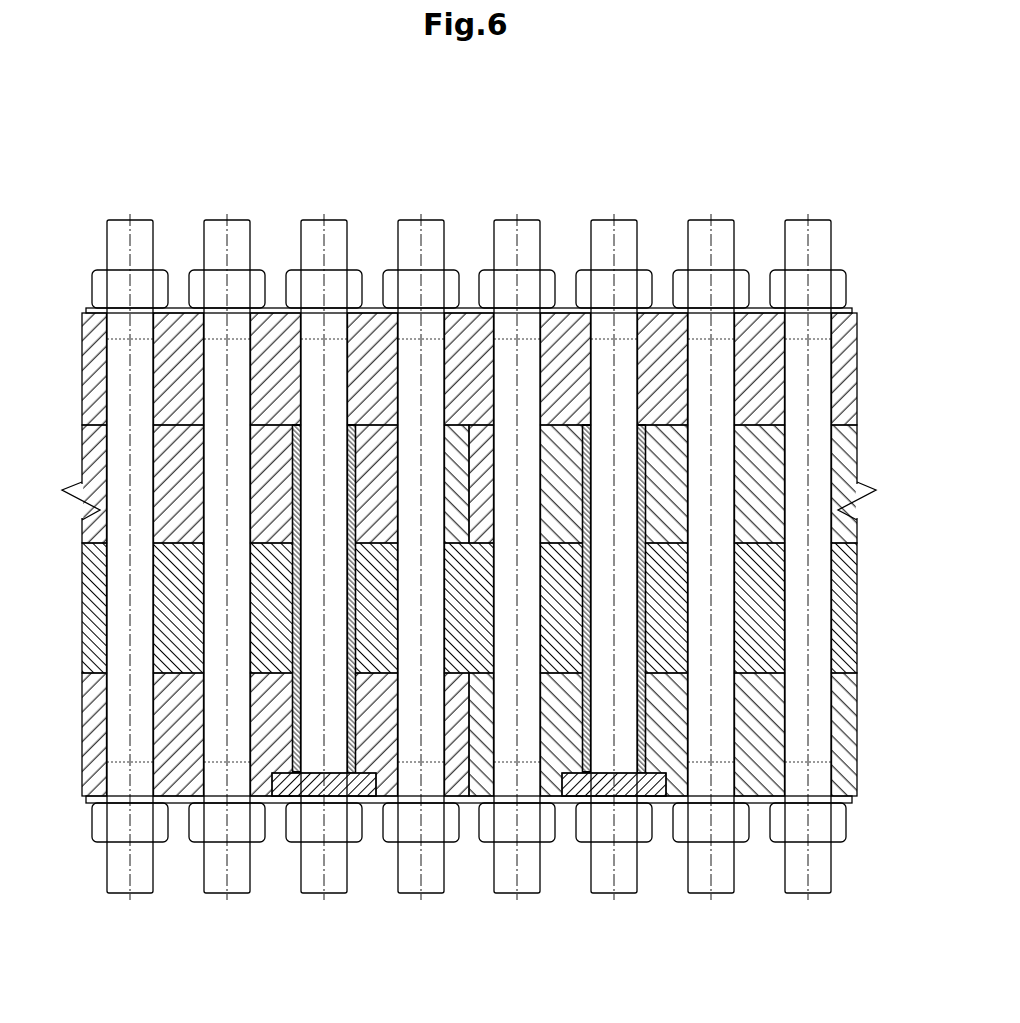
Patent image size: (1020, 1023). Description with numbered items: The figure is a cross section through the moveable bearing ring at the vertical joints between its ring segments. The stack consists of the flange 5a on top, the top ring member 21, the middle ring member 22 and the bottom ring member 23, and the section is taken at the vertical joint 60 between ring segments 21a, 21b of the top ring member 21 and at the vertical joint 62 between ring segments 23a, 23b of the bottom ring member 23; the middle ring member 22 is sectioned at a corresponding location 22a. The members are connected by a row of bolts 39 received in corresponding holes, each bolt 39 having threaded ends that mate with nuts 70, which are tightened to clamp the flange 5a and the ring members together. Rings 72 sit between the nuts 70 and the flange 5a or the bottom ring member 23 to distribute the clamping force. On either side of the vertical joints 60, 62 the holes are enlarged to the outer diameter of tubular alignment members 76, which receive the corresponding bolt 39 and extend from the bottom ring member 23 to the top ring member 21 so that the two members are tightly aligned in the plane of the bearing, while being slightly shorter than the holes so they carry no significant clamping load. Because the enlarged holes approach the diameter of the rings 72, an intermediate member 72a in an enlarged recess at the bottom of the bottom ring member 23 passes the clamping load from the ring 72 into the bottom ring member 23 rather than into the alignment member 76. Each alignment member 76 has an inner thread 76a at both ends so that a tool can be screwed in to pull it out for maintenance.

The flange 5a is at (845, 378).
The top ring member 21 is at (846, 457).
The ring segment 21a is at (92, 448).
The ring segment 21b is at (846, 540).
The middle ring member 22 is at (846, 616).
The second layer portion 22a is at (92, 606).
The bottom ring member 23 is at (846, 735).
The ring segment 23a is at (92, 740).
The ring segment 23b is at (843, 772).
The bolt 39 is at (140, 896).
The vertical joint 60 is at (470, 476).
The vertical joint 62 is at (468, 727).
The nut 70 is at (94, 287).
The ring 72 is at (177, 308).
The intermediate member 72a is at (345, 800).
The tubular alignment member 76 is at (300, 604).
The inner thread 76a is at (302, 450).